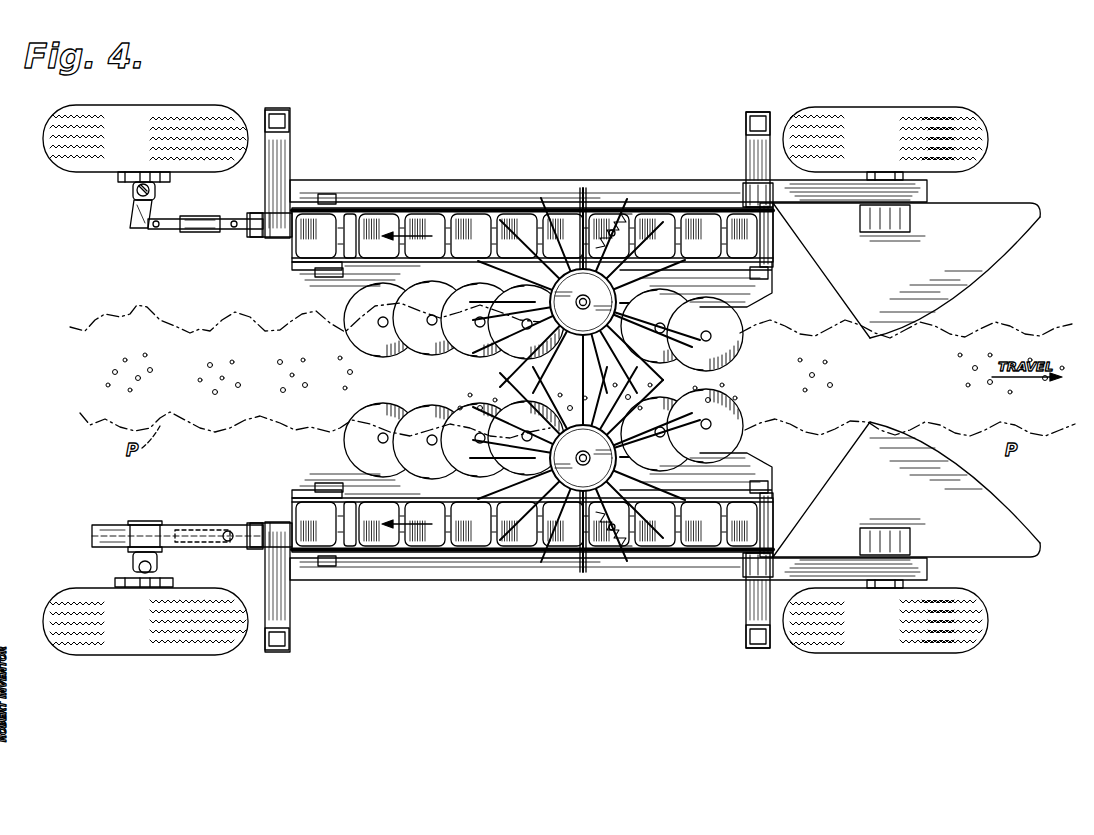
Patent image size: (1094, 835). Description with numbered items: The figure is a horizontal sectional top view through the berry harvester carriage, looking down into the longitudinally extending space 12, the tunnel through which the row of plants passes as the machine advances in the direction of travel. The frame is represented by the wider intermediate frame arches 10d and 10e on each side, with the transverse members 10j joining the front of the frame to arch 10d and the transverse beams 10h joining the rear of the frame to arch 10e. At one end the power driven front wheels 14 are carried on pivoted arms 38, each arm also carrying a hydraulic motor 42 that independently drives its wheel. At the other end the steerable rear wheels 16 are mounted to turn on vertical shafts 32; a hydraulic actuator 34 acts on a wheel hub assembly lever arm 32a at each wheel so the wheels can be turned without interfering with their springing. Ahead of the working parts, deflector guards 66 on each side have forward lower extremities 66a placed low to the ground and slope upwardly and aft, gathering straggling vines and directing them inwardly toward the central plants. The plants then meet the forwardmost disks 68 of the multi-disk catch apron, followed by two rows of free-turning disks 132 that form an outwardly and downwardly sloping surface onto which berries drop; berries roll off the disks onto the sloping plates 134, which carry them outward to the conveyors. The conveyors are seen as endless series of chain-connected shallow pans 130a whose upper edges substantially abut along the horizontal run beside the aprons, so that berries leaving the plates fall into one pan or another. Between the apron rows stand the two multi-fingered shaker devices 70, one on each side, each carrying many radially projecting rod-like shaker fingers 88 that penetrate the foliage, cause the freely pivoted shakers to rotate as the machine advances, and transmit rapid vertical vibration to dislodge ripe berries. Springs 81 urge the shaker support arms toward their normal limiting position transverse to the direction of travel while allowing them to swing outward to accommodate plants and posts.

The intermediate frame arch 10d is at (770, 112).
The intermediate frame arch 10e is at (288, 110).
The transverse beam 10h is at (290, 160).
The transverse member 10j is at (746, 162).
The longitudinally extending space 12 is at (784, 360).
The front wheel 14 is at (988, 138).
The rear wheel 16 is at (43, 145).
The vertical shaft 32 is at (137, 194).
The wheel hub assembly lever arm 32a is at (150, 214).
The hydraulic actuator 34 is at (202, 528).
The pivoted arm 38 is at (927, 189).
The hydraulic motor 42 is at (910, 218).
The deflector guard 66 is at (1000, 242).
The forward lower extremity 66a is at (1037, 206).
The forwardmost disk 68 is at (748, 318).
The shaker device 70 is at (672, 277).
The spring 81 is at (603, 212).
The shaker finger 88 is at (538, 350).
The pan 130a is at (466, 213).
The disk 132 is at (360, 306).
The sloping plate 134 is at (312, 280).